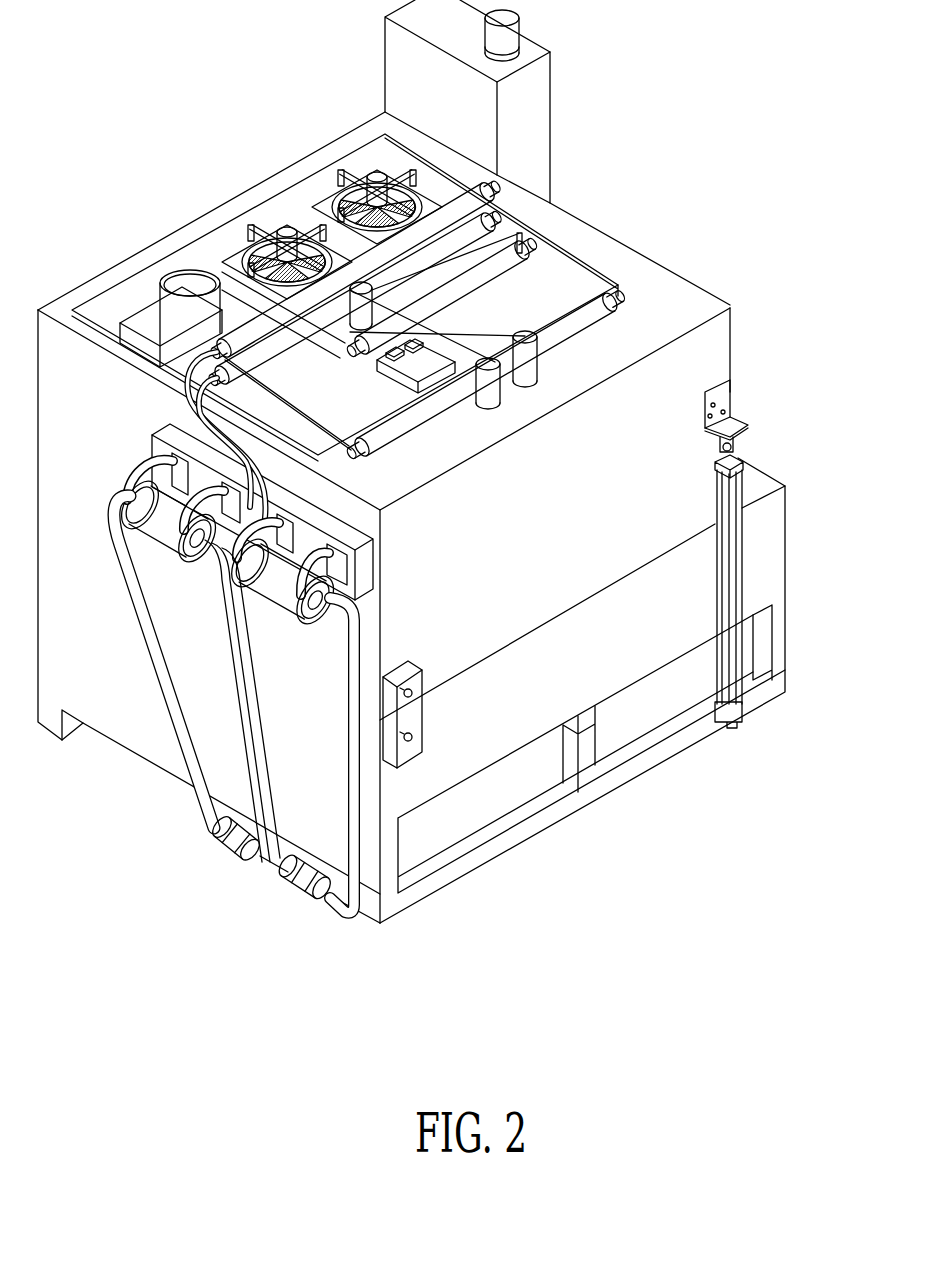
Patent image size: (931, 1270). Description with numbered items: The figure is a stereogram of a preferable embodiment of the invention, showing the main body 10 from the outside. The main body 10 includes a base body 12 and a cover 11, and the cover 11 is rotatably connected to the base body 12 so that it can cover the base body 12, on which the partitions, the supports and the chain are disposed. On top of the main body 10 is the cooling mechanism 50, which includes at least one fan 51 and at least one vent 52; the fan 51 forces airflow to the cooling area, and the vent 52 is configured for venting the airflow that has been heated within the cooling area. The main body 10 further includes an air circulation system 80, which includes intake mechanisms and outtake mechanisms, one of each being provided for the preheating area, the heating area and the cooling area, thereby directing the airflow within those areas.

The main body 10 is at (795, 285).
The cover 11 is at (707, 306).
The base body 12 is at (763, 513).
The cooling mechanism 50 is at (284, 73).
The fan 51 is at (240, 273).
The vent 52 is at (186, 276).
The air circulation system 80 is at (272, 585).